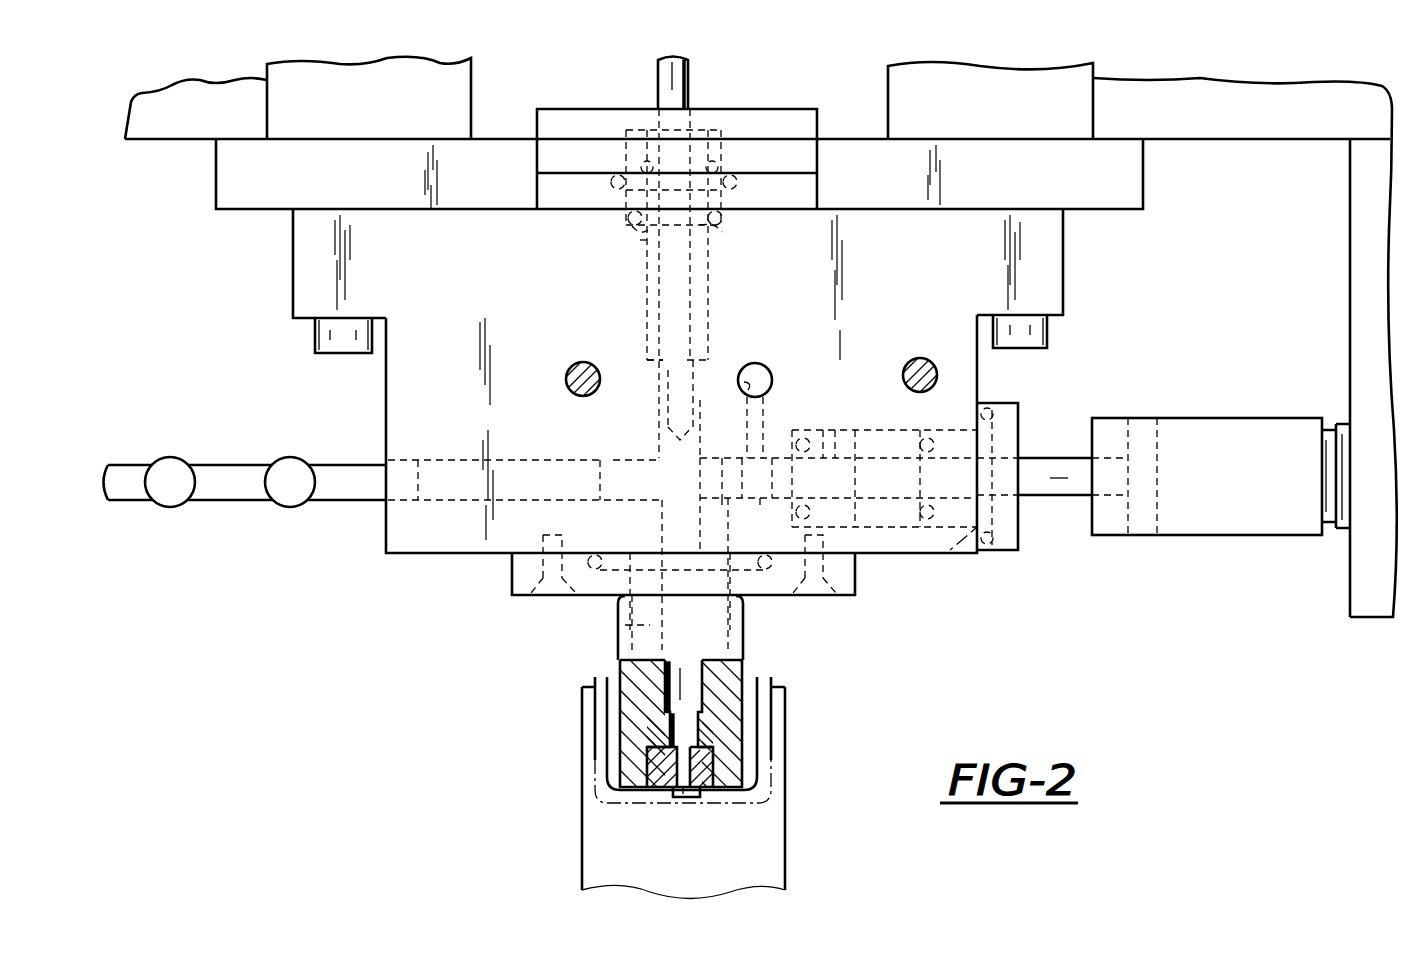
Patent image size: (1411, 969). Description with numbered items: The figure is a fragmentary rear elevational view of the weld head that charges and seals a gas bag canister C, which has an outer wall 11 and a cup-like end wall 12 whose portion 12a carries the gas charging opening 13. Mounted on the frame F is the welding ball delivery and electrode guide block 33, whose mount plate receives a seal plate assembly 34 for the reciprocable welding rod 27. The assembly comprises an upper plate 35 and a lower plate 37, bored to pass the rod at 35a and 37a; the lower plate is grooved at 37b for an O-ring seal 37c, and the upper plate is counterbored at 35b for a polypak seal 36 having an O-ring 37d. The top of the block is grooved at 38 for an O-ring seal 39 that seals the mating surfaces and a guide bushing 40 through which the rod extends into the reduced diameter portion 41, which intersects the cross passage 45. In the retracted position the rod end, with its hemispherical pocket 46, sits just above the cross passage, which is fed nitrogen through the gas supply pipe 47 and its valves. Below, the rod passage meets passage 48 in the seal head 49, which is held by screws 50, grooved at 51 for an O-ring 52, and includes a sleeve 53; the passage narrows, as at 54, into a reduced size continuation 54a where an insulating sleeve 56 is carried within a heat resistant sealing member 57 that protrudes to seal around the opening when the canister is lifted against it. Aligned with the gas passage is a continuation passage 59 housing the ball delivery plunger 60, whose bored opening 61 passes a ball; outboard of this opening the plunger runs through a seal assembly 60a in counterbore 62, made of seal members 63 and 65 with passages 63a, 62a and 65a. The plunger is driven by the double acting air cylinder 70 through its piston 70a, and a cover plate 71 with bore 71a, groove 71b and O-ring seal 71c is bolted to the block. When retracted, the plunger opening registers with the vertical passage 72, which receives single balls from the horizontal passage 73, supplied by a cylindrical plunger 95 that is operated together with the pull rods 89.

The frame F is at (1181, 98).
The gas bag canister C is at (582, 812).
The outer wall 11 is at (592, 752).
The cup-like end wall 12 is at (607, 736).
The portion of end wall 12a is at (636, 806).
The opening 13 is at (686, 798).
The welding rod 27 is at (689, 88).
The welding ball delivery and welding electrode guide assembly block 33 is at (252, 206).
The seal plate assembly 34 is at (537, 124).
The upper plate 35 is at (552, 108).
The bore 35a is at (656, 130).
The counterbore 35b is at (716, 132).
The polypak seal 36 is at (620, 166).
The lower plate 37 is at (546, 208).
The bore 37a is at (735, 198).
The groove 37b is at (638, 192).
The O-ring seal 37c is at (762, 200).
The O-ring 37d is at (746, 168).
The groove 38 is at (713, 224).
The O-ring seal 39 is at (642, 230).
The guide bushing 40 is at (646, 245).
The reduced diameter portion 41 is at (656, 378).
The cross passage 45 is at (437, 506).
The hemispherically shaped pocket 46 is at (703, 398).
The gas supply pipe 47 is at (326, 497).
The passage 48 is at (746, 628).
The seal head 49 is at (591, 590).
The screws 50 is at (522, 580).
The grooved portion 51 is at (643, 556).
The O-ring 52 is at (778, 577).
The sleeve 53 is at (625, 625).
The nozzle body 54 is at (663, 661).
The reduced size passage continuation 54a is at (670, 718).
The insulating sleeve 56 is at (700, 727).
The sealing member 57 is at (705, 798).
The continuation passage 59 is at (760, 500).
The ball delivery plunger 60 is at (717, 472).
The seal assembly 60a is at (965, 560).
The bored opening 61 is at (724, 500).
The counterbore 62 is at (877, 430).
The passage 62a is at (931, 440).
The seal member 63 is at (824, 430).
The passage 63a is at (836, 428).
The seal member 65 is at (965, 428).
The passage 65a is at (962, 540).
The air cylinder 70 is at (1276, 418).
The piston 70a is at (1157, 525).
The cover plate 71 is at (1019, 525).
The bore 71a is at (1019, 472).
The groove 71b is at (1020, 405).
The O-ring seal 71c is at (1019, 552).
The vertical passage 72 is at (777, 415).
The horizontal passage 73 is at (756, 372).
The pull rods 89 is at (572, 369).
The plunger 95 is at (748, 390).